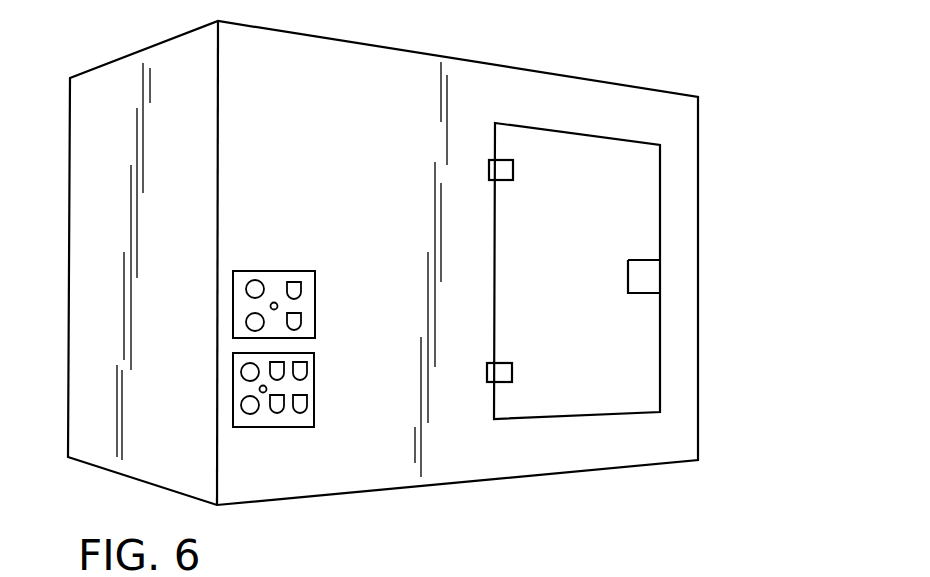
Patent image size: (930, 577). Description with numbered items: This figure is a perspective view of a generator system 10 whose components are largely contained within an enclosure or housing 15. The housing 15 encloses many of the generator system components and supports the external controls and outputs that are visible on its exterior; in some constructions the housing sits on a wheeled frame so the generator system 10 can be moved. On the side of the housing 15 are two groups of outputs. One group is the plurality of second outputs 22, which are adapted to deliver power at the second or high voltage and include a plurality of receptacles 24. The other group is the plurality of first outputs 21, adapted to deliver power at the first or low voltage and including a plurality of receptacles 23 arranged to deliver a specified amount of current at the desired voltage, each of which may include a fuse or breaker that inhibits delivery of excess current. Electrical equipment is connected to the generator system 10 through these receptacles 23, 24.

The generator system 10 is at (745, 84).
The housing 15 is at (482, 82).
The first outputs 21 is at (276, 431).
The second outputs 22 is at (263, 267).
The receptacles 23 is at (307, 402).
The receptacles 24 is at (295, 283).